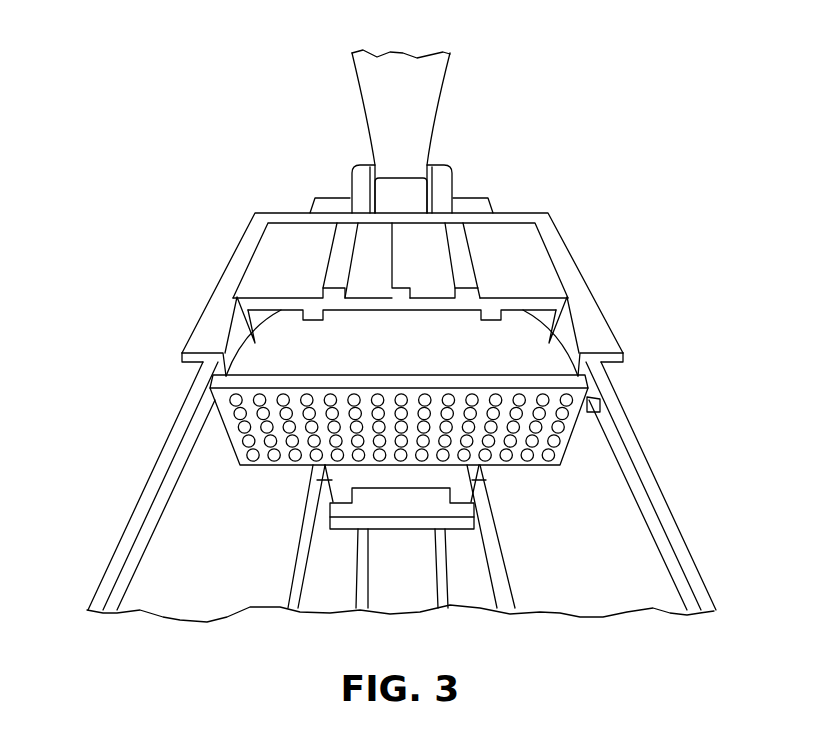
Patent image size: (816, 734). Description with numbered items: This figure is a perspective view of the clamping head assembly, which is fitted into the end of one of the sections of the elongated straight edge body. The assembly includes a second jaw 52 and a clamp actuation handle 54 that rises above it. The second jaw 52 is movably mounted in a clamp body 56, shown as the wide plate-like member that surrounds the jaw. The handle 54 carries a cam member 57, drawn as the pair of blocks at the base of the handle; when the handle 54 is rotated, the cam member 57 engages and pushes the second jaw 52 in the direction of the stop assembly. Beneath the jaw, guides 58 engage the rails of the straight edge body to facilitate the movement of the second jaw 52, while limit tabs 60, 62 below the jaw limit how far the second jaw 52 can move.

The second jaw 52 is at (268, 466).
The clamp actuation handle 54 is at (370, 80).
The clamp body 56 is at (572, 268).
The cam member 57 is at (360, 185).
The guides 58 is at (487, 468).
The limit tab 60 is at (470, 495).
The limit tab 62 is at (330, 505).